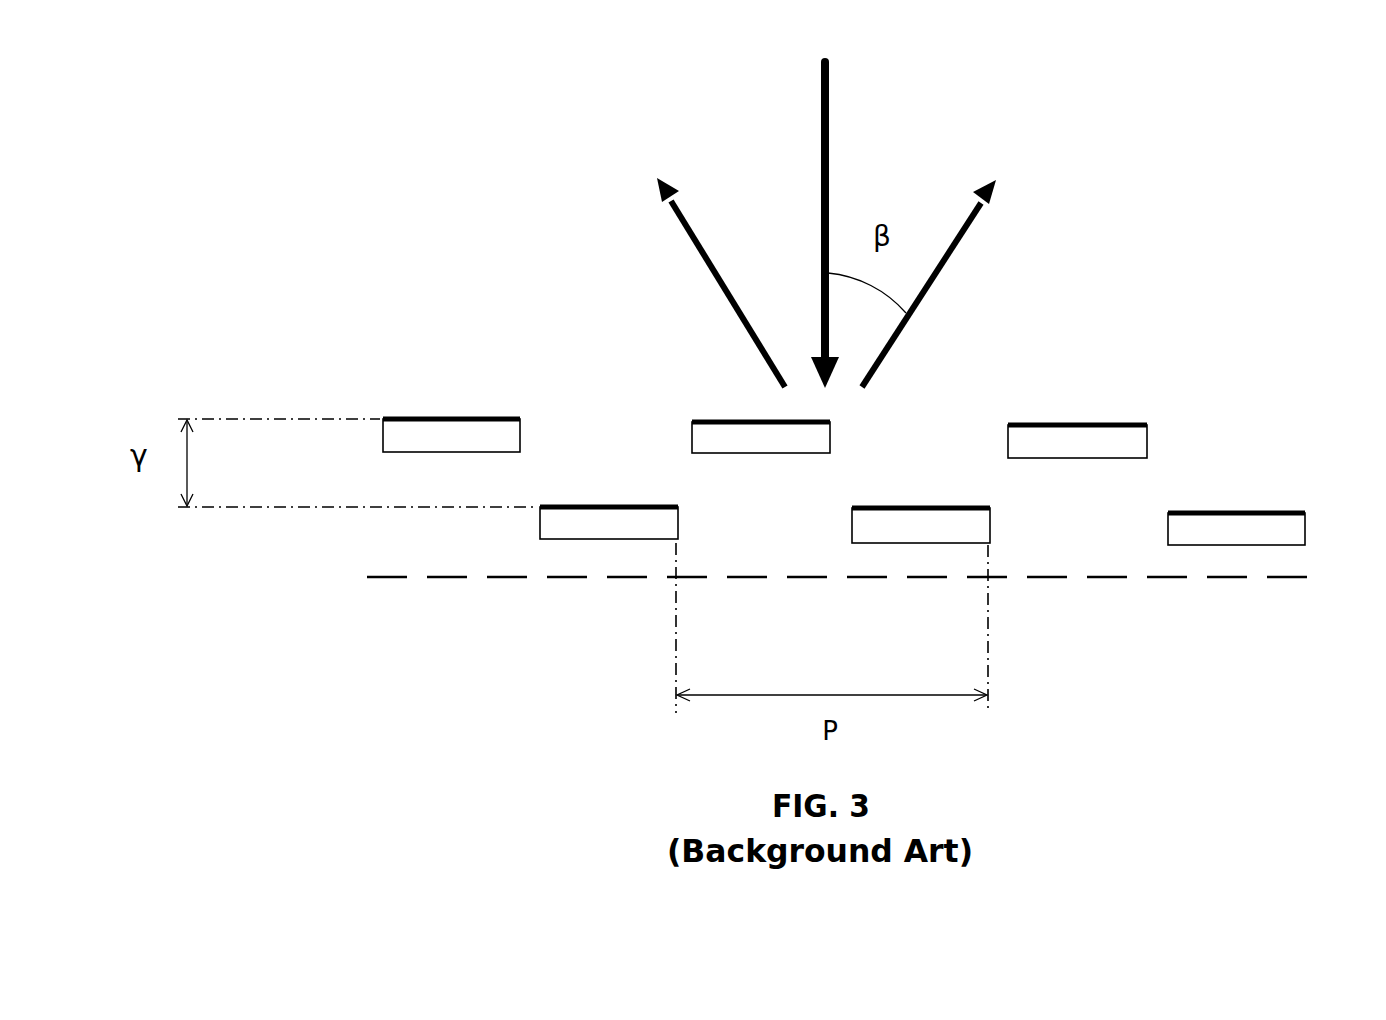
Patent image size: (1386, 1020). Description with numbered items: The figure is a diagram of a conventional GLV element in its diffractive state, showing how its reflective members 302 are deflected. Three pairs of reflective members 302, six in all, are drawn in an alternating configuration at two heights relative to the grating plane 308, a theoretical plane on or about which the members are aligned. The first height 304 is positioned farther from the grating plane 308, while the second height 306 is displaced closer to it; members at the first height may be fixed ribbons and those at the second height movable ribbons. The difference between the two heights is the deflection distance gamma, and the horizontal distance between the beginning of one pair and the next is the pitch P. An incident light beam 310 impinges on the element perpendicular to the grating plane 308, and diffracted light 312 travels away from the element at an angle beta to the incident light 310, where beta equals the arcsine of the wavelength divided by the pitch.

The reflective members 302 is at (451, 418).
The first height 304 is at (1008, 425).
The second height 306 is at (1305, 515).
The grating plane 308 is at (1148, 583).
The incident light beam 310 is at (823, 187).
The diffracted light 312 is at (957, 244).